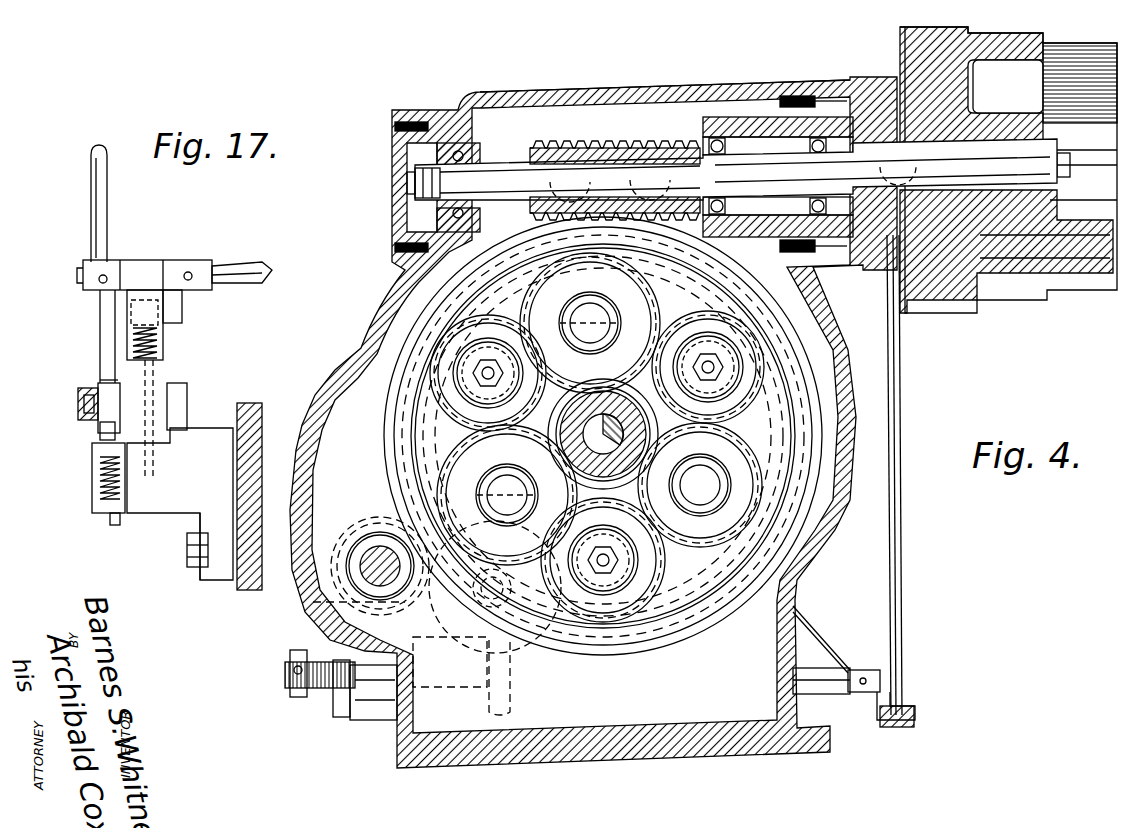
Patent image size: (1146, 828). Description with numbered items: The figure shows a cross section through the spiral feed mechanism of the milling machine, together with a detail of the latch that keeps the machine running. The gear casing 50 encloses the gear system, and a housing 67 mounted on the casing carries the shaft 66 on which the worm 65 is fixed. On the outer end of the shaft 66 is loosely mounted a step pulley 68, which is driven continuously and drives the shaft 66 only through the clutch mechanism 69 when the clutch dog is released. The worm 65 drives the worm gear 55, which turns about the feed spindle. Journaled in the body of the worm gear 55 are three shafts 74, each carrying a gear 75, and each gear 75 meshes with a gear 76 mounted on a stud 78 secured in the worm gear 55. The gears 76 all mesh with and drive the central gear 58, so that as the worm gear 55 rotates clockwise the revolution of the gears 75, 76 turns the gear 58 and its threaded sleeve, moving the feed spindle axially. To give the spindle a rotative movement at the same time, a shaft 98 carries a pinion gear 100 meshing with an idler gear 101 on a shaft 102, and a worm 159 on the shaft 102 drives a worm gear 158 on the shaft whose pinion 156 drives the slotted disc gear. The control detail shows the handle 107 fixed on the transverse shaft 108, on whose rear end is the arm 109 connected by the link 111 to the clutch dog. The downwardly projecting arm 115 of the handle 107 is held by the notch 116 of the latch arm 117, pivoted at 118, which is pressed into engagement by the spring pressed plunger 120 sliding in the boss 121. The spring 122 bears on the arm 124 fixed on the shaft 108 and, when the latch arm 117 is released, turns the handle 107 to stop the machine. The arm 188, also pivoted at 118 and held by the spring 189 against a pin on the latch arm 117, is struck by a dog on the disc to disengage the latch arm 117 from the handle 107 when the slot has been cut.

In FIG. 4, the gear casing 50 is at (390, 300).
In FIG. 4, the worm gear 55 is at (717, 592).
In FIG. 4, the gear 58 is at (650, 450).
In FIG. 4, the worm 65 is at (620, 150).
In FIG. 4, the shaft 66 is at (513, 178).
In FIG. 4, the housing 67 is at (640, 88).
In FIG. 4, the step pulley 68 is at (1013, 302).
In FIG. 4, the clutch mechanism 69 is at (858, 250).
In FIG. 4, the shaft 74 is at (470, 375).
In FIG. 4, the gear 75 is at (757, 362).
In FIG. 4, the gear 76 is at (553, 275).
In FIG. 4, the stud 78 is at (600, 320).
In FIG. 4, the shaft 98 is at (377, 553).
In FIG. 4, the pinion gear 100 is at (346, 566).
In FIG. 4, the idler gear 101 is at (528, 658).
In FIG. 4, the shaft 102 is at (413, 632).
In FIG. 17, the handle 107 is at (108, 219).
In FIG. 4, the transverse shaft 108 is at (890, 673).
In FIG. 17, the transverse shaft 108 is at (266, 266).
In FIG. 4, the arm 109 is at (880, 704).
In FIG. 4, the link 111 is at (903, 590).
In FIG. 17, the arm 115 is at (107, 318).
In FIG. 17, the notch 116 is at (100, 378).
In FIG. 17, the latch arm 117 is at (112, 405).
In FIG. 17, the pivot 118 is at (78, 395).
In FIG. 17, the spring pressed plunger 120 is at (112, 521).
In FIG. 17, the boss 121 is at (94, 497).
In FIG. 17, the spring 122 is at (152, 350).
In FIG. 17, the arm 124 is at (172, 312).
In FIG. 4, the pinion 156 is at (312, 702).
In FIG. 4, the worm gear 158 is at (513, 698).
In FIG. 4, the worm 159 is at (511, 592).
In FIG. 17, the arm 188 is at (98, 425).
In FIG. 17, the spring 189 is at (84, 404).